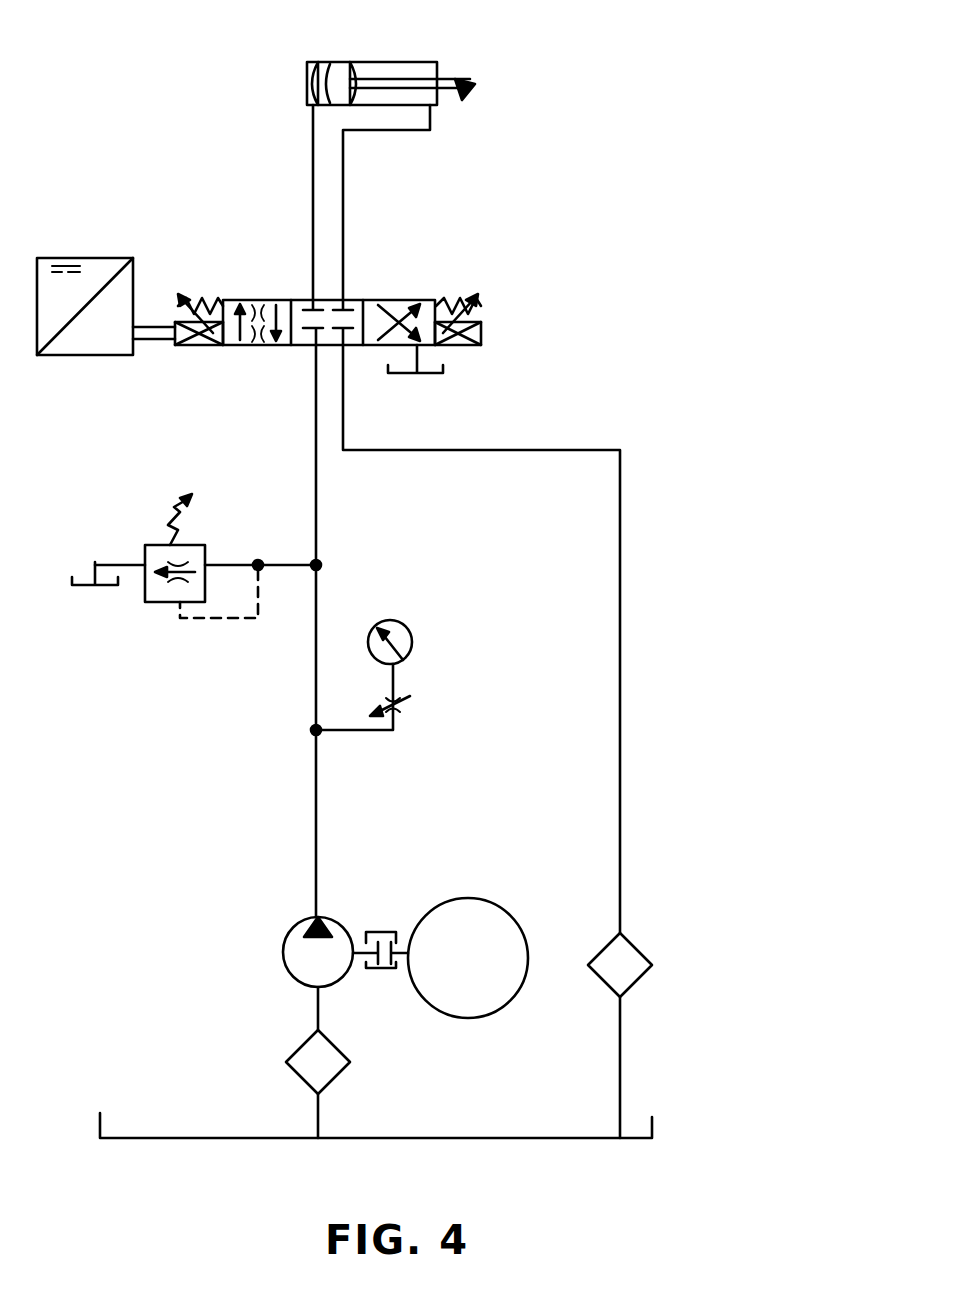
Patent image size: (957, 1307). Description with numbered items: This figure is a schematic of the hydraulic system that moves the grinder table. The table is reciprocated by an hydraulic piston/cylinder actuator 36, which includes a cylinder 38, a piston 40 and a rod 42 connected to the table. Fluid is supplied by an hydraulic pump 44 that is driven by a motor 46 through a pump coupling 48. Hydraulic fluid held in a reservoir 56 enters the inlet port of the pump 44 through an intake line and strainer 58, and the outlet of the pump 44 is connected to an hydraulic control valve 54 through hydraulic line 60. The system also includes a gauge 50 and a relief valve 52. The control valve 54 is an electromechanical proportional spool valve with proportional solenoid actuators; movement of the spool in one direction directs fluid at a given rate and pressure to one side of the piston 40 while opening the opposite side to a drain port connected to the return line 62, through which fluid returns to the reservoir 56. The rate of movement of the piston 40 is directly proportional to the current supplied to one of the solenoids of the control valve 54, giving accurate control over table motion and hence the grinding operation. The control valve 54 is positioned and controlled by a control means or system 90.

The hydraulic piston/cylinder actuator 36 is at (410, 53).
The cylinder 38 is at (396, 62).
The piston 40 is at (335, 62).
The rod 42 is at (455, 78).
The hydraulic pump 44 is at (288, 931).
The motor 46 is at (459, 898).
The pump coupling 48 is at (394, 970).
The gauge 50 is at (411, 637).
The relief valve 52 is at (200, 630).
The hydraulic control valve 54 is at (408, 280).
The reservoir 56 is at (654, 1127).
The strainer 58 is at (304, 1042).
The hydraulic line 60 is at (316, 836).
The return line 62 is at (620, 652).
The control means or system 90 is at (96, 258).